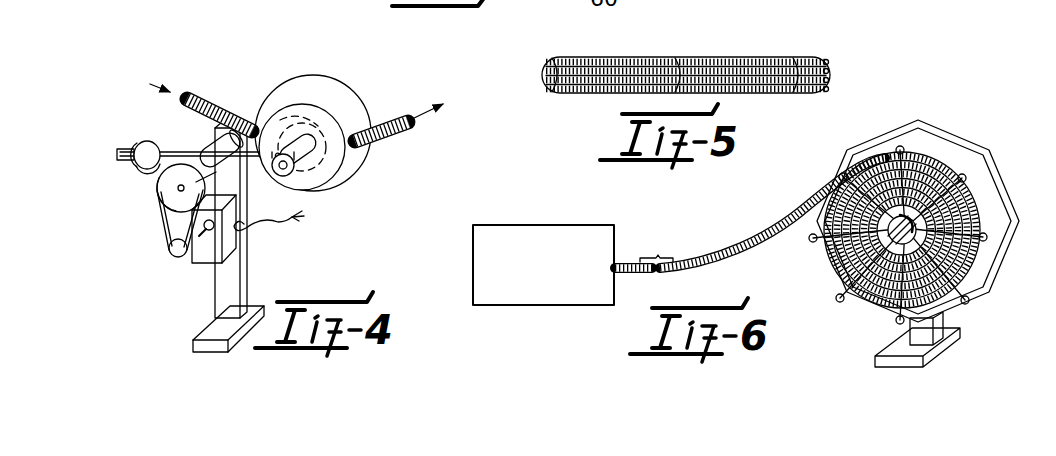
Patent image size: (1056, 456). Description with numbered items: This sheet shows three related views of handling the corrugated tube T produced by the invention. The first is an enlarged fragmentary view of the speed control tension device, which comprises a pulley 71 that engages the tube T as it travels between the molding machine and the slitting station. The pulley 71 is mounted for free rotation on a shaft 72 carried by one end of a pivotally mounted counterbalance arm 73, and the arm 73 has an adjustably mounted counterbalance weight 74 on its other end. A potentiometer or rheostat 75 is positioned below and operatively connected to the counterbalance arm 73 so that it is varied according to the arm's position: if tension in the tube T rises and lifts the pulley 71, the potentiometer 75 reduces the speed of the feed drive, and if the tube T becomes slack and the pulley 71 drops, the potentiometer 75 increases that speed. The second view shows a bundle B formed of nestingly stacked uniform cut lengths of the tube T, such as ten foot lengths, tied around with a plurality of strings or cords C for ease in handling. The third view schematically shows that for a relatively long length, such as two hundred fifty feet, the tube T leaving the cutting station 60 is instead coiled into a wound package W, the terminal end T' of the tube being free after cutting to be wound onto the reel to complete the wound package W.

In FIG. 4, the pulley 71 is at (348, 86).
In FIG. 4, the shaft 72 is at (283, 177).
In FIG. 4, the counterbalance arm 73 is at (176, 150).
In FIG. 4, the counterbalance weight 74 is at (138, 167).
In FIG. 4, the potentiometer 75 is at (236, 243).
In FIG. 4, the tube T is at (201, 87).
In FIG. 6, the tube T is at (772, 213).
In FIG. 6, the terminal end of the tube T' is at (644, 239).
In FIG. 5, the tied strings or cords C is at (555, 58).
In FIG. 5, the bundle B is at (740, 50).
In FIG. 6, the cutting station 60 is at (541, 220).
In FIG. 6, the wound package W is at (945, 148).